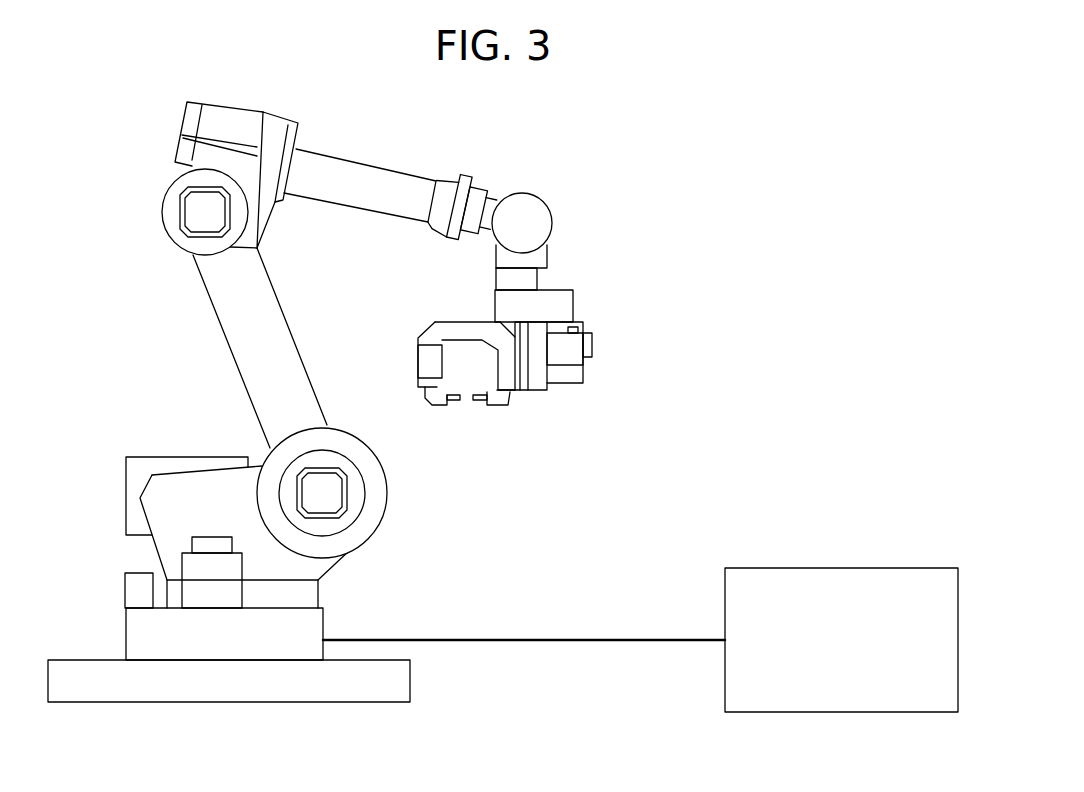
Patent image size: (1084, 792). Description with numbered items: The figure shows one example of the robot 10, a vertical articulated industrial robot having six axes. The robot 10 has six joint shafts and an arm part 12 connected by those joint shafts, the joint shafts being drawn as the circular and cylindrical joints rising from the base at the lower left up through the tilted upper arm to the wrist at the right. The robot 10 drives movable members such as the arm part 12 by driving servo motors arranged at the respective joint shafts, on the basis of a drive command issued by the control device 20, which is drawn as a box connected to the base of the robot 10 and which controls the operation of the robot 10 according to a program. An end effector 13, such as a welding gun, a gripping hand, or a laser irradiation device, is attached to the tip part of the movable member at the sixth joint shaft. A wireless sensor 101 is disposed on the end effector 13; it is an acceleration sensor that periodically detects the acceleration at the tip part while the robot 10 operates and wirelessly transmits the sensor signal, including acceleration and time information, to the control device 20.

The robot 10 is at (112, 147).
The arm part 12 is at (377, 173).
The end effector 13 is at (542, 377).
The wireless sensor 101 is at (425, 358).
The control device 20 is at (842, 568).